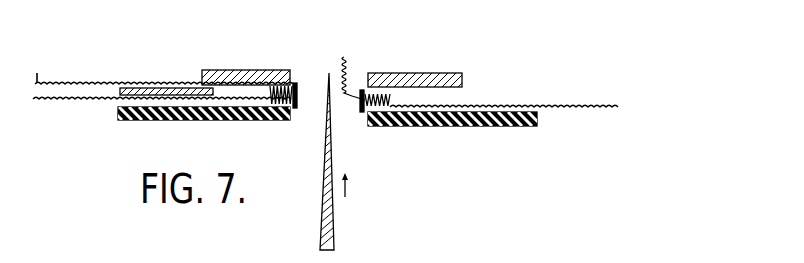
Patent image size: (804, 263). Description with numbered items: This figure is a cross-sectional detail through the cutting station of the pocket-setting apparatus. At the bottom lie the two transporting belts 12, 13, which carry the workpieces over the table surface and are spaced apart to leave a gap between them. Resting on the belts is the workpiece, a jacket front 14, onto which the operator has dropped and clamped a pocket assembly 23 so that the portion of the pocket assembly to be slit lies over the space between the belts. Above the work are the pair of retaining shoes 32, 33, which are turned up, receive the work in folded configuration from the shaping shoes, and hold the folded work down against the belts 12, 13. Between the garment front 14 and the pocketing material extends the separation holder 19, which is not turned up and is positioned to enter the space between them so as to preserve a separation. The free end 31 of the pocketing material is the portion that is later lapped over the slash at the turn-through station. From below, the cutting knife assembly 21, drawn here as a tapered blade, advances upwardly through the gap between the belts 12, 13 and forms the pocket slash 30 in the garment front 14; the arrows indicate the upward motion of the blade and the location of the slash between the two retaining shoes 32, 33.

The belt 12 is at (452, 127).
The belt 13 is at (188, 121).
The jacket front 14 is at (64, 104).
The separation holder 19 is at (152, 88).
The cutting knife assembly 21 is at (322, 186).
The pocket assembly 23 is at (90, 78).
The pocket slash 30 is at (316, 88).
The free end of pocketing material 31 is at (36, 64).
The retaining shoe 32 is at (415, 73).
The retaining shoe 33 is at (245, 70).